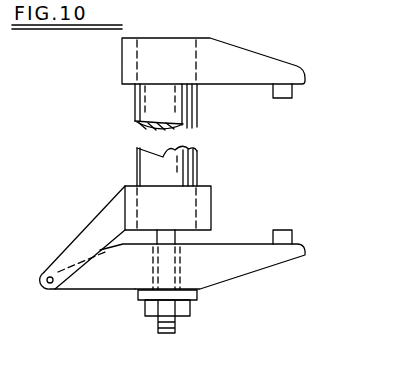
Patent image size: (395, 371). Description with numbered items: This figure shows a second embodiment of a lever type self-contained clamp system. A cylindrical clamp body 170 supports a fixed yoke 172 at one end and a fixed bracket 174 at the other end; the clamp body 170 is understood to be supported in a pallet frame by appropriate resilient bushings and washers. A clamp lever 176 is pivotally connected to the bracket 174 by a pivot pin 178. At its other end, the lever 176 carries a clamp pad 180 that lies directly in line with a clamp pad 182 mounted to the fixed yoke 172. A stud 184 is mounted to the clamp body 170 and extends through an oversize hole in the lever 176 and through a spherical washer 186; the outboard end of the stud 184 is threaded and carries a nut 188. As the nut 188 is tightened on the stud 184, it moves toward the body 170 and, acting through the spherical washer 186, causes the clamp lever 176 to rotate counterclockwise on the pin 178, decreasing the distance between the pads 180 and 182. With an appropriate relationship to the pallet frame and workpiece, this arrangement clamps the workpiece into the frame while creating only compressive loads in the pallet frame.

The cylindrical clamp body 170 is at (188, 116).
The fixed yoke 172 is at (243, 60).
The fixed bracket 174 is at (93, 228).
The clamp lever 176 is at (250, 277).
The pivot pin 178 is at (50, 286).
The clamp pad 180 is at (285, 230).
The clamp pad 182 is at (292, 91).
The stud 184 is at (165, 238).
The spherical washer 186 is at (137, 291).
The nut 188 is at (190, 311).